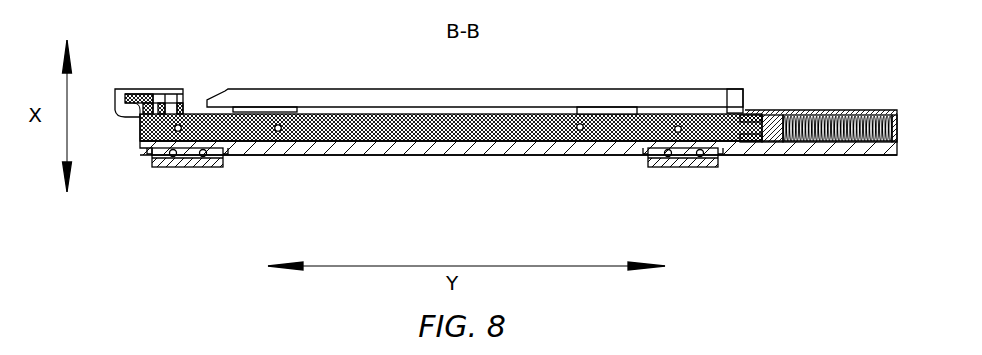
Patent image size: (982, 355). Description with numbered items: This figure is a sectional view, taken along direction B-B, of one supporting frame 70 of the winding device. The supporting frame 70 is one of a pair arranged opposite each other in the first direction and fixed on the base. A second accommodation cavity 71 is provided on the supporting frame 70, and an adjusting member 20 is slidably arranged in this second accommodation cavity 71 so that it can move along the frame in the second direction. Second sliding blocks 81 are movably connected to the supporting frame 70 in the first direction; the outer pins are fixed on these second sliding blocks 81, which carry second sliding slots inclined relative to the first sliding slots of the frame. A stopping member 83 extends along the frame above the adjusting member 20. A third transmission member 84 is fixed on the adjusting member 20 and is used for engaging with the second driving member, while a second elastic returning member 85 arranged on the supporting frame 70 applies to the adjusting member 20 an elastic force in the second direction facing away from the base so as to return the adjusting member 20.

The adjusting member 20 is at (331, 114).
The supporting frame 70 is at (360, 153).
The second accommodation cavity 71 is at (520, 166).
The second sliding block 81 is at (193, 167).
The stopping member 83 is at (548, 102).
The third transmission member 84 is at (137, 92).
The second elastic returning member 85 is at (818, 142).